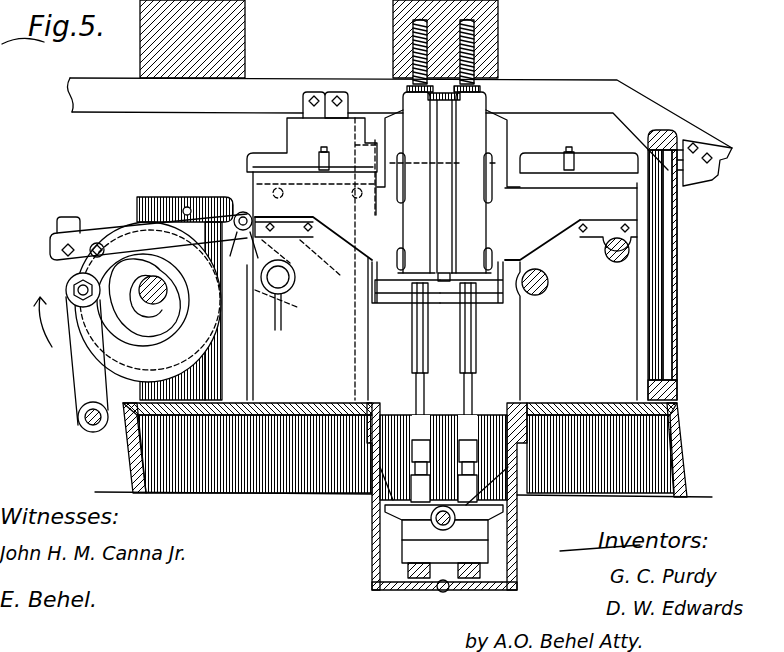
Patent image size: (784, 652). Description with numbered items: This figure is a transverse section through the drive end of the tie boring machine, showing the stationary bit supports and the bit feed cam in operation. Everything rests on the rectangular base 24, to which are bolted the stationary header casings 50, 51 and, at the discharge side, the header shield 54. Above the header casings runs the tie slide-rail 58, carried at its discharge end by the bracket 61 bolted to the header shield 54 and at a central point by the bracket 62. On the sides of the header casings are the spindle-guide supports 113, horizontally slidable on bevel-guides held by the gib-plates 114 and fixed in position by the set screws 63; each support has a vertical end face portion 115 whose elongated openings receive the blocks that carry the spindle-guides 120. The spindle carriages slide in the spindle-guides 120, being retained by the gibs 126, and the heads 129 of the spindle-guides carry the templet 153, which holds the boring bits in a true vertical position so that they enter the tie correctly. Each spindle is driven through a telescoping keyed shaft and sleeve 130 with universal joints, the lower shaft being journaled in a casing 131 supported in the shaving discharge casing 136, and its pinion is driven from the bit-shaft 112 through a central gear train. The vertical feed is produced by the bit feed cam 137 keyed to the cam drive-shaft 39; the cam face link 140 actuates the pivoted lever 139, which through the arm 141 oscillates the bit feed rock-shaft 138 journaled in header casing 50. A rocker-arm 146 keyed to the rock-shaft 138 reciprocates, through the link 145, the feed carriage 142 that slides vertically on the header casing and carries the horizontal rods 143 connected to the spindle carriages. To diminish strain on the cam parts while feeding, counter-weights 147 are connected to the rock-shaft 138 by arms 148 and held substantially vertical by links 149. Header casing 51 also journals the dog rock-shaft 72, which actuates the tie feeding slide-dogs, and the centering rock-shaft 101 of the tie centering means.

The tie slide-rail 58 is at (400, 124).
The bracket 62 is at (337, 92).
The templet 153 is at (410, 93).
The head of spindle-guide 129 is at (485, 97).
The bracket 61 is at (701, 136).
The set screw 63 is at (321, 151).
The spindle-guide support 113 is at (442, 185).
The gib-plate 114 is at (298, 230).
The link 145 is at (357, 203).
The header casing 50 is at (314, 286).
The arm 148 is at (232, 297).
The bit feed rock-shaft 138 is at (280, 283).
The rocker-arm 146 is at (304, 273).
The header casing 51 is at (576, 291).
The rock-shaft 72 is at (615, 263).
The centering rock-shaft 101 is at (536, 296).
The spindle-guide 120 is at (444, 182).
The gib 126 is at (440, 136).
The vertical end face portion 115 is at (443, 163).
The feed carriage 142 is at (394, 301).
The horizontal rod 143 is at (488, 292).
The telescoping keyed shaft and sleeve 130 is at (462, 357).
The header shield 54 is at (670, 303).
The link 149 is at (222, 206).
The cam drive-shaft 39 is at (164, 296).
The counter-weight 147 is at (183, 195).
The cam face link 140 is at (148, 237).
The bit feed cam 137 is at (80, 223).
The arm 141 is at (237, 240).
The pivoted lever 139 is at (86, 374).
The base 24 is at (310, 465).
The shaving discharge casing 136 is at (372, 500).
The casing 131 is at (505, 510).
The bit-shaft 112 is at (443, 531).